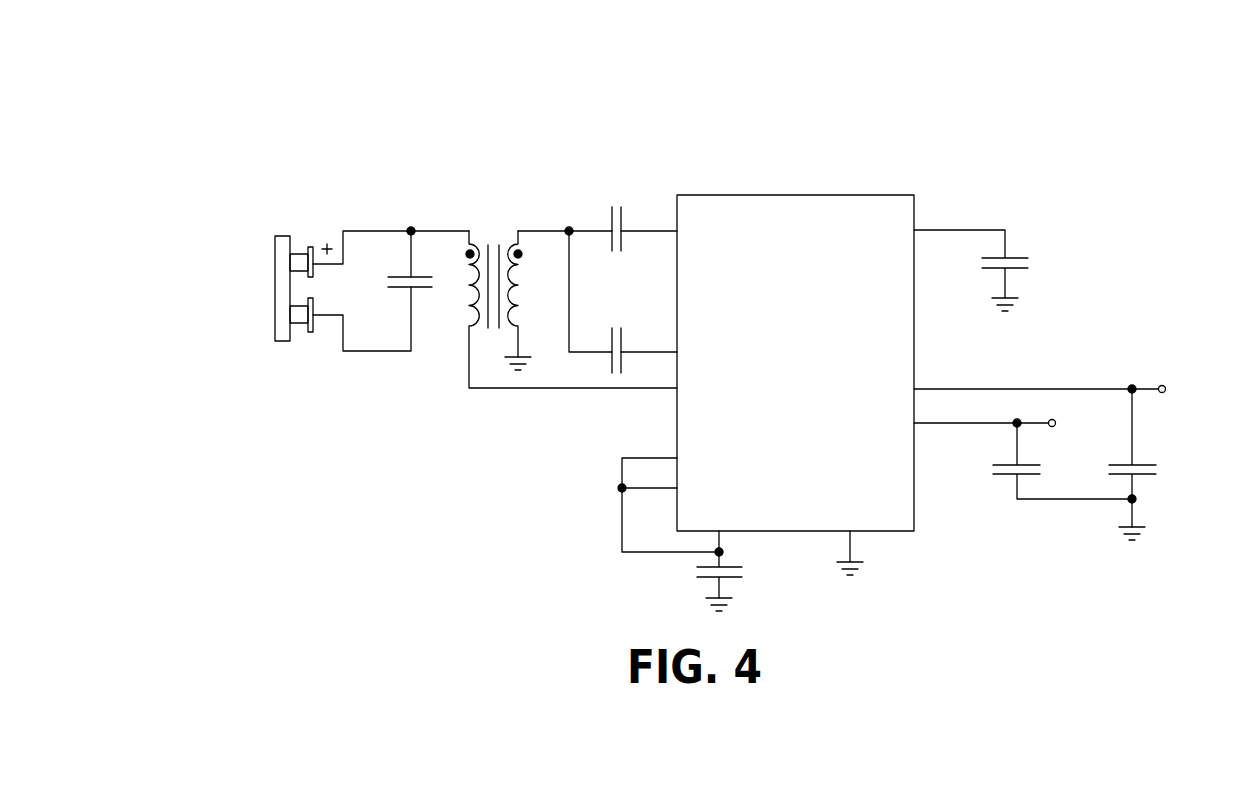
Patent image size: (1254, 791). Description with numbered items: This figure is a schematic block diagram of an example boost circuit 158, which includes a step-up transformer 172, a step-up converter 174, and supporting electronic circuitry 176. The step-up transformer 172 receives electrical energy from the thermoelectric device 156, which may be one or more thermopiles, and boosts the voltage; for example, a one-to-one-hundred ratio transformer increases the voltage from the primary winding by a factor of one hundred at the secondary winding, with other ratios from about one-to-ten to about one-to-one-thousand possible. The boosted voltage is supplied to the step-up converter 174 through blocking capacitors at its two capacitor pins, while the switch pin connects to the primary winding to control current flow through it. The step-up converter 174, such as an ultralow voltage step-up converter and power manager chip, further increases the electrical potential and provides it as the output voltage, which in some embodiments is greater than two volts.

The thermoelectric device 156 is at (275, 288).
The boost circuit 158 is at (1070, 110).
The step-up transformer 172 is at (500, 219).
The step-up converter 174 is at (914, 209).
The supporting electronic circuitry 176 is at (486, 472).